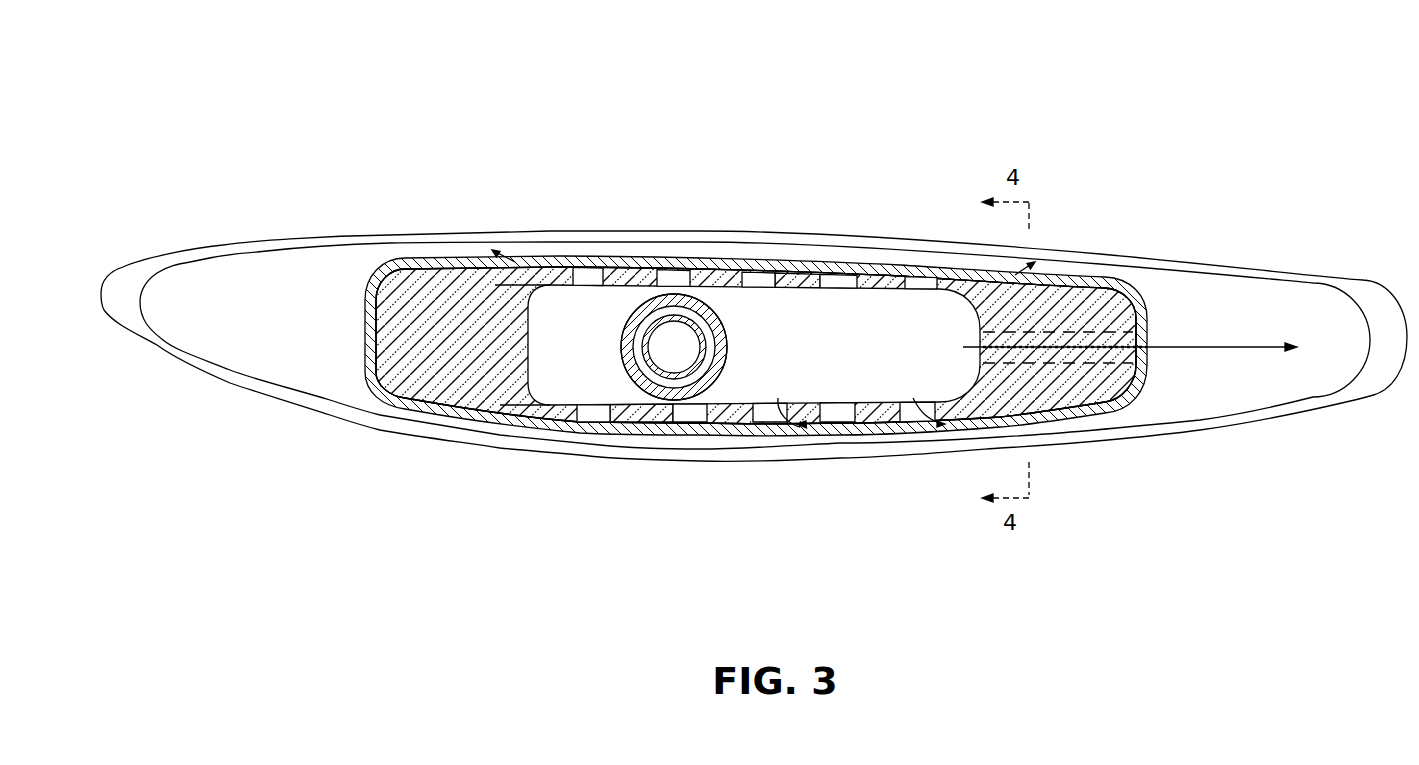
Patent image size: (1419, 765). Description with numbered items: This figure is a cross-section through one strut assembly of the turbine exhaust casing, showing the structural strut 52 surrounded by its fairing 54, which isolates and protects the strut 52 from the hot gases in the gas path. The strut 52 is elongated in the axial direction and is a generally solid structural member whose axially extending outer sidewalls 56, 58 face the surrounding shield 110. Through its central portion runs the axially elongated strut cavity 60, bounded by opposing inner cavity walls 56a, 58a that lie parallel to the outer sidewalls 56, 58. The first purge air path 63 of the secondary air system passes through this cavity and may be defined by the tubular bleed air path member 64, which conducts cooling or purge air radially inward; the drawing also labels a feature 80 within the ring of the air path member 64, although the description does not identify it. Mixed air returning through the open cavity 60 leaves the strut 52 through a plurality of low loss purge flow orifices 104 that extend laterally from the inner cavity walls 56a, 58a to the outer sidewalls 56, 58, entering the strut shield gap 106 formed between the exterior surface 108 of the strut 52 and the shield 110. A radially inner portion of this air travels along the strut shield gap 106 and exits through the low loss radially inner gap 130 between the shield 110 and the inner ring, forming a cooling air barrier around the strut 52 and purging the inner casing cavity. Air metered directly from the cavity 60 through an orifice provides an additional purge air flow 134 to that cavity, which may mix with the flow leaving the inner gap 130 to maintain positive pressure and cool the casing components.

The structural strut 52 is at (1117, 377).
The fairing 54 is at (215, 248).
The outer sidewall 56 is at (650, 275).
The inner cavity wall 56a is at (800, 291).
The outer sidewall 58 is at (648, 420).
The inner cavity wall 58a is at (623, 404).
The strut cavity 60 is at (821, 338).
The first purge air path 63 is at (657, 313).
The tubular bleed air path member 64 is at (703, 297).
The shaft bore 80 is at (638, 345).
The low loss purge flow orifices 104 is at (605, 297).
The strut shield gap 106 is at (1105, 411).
The exterior surface 108 is at (1048, 420).
The shield 110 is at (985, 433).
The radially inner gap 130 is at (1020, 273).
The additional purge air flow 134 is at (1217, 345).